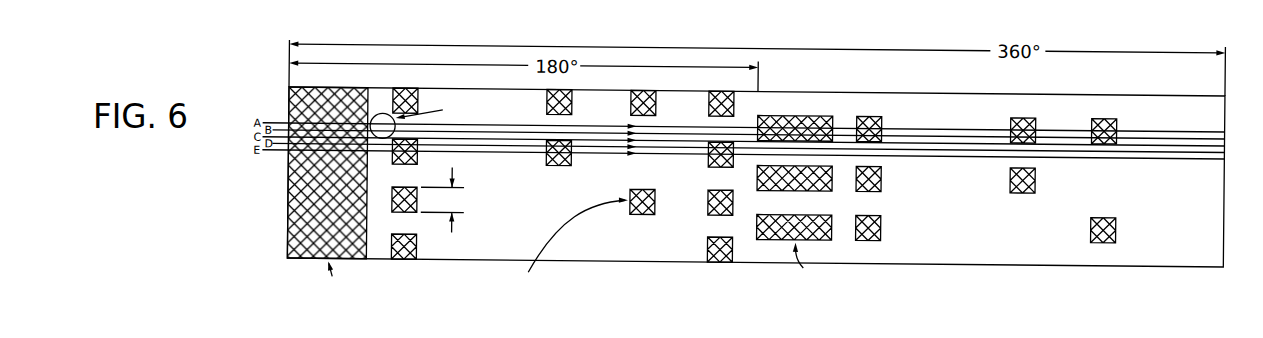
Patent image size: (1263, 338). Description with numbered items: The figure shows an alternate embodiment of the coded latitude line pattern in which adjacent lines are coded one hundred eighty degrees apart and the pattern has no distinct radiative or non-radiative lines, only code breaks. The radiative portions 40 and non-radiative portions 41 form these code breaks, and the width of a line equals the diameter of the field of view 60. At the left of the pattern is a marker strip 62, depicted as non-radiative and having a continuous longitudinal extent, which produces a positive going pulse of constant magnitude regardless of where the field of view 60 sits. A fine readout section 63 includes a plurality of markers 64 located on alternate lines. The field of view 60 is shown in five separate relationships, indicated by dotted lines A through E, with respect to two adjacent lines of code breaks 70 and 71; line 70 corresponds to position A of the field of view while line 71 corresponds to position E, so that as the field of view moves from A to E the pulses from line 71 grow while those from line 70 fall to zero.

The radiative portion 40 is at (480, 95).
The non-radiative portion 41 is at (566, 90).
The field of view 60 is at (374, 116).
The marker strip 62 is at (345, 241).
The fine readout section 63 is at (936, 196).
The marker 64 is at (785, 113).
The line of code breaks 70 is at (1225, 123).
The line of code breaks 71 is at (1225, 150).